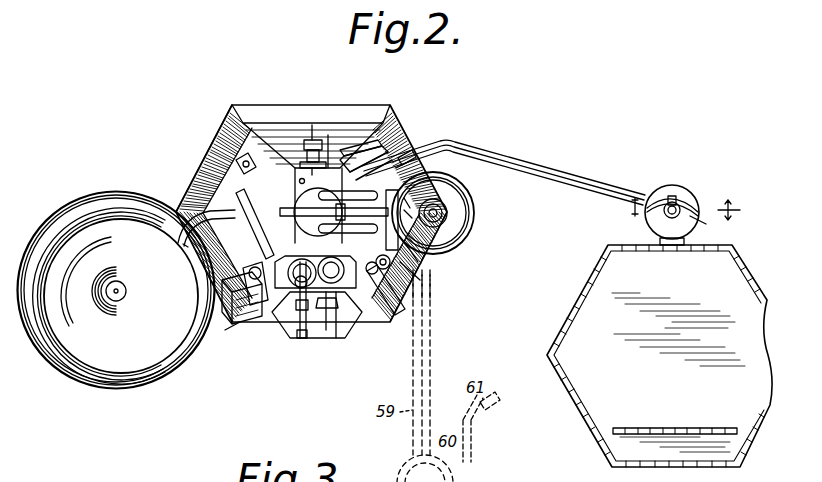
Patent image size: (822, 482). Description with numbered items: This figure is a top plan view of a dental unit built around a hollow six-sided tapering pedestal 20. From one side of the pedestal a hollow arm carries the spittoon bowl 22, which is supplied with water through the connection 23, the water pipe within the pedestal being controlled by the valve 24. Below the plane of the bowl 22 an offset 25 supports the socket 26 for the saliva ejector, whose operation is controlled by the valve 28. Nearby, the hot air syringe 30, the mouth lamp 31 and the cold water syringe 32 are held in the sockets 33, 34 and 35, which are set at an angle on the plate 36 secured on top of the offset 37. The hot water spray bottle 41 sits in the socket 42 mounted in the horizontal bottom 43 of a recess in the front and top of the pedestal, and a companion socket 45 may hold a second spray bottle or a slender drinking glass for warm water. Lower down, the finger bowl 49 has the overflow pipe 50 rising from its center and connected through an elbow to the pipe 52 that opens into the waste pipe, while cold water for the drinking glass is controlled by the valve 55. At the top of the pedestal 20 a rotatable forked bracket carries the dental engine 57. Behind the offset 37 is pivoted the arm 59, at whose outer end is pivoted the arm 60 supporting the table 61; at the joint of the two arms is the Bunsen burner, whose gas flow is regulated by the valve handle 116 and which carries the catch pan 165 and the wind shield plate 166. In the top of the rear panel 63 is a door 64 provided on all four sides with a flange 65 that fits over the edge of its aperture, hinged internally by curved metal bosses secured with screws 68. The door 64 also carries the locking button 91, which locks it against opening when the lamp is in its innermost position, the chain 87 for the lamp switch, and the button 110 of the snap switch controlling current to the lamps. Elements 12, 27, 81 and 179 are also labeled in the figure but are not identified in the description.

The pivot axis 12 is at (684, 212).
The pedestal 20 is at (236, 188).
The spittoon bowl 22 is at (128, 388).
The connection 23 is at (187, 215).
The valve 24 is at (240, 162).
The offset 25 is at (240, 330).
The socket 26 is at (234, 318).
The link 27 is at (257, 302).
The valve 28 is at (206, 228).
The hot air syringe 30 is at (437, 311).
The mouth lamp 31 is at (439, 302).
The cold water syringe 32 is at (430, 282).
The socket 33 is at (378, 312).
The socket 34 is at (434, 293).
The socket 35 is at (427, 255).
The plate 36 is at (382, 322).
The offset 37 is at (450, 242).
The hot water spray bottle 41 is at (304, 300).
The socket 42 is at (297, 300).
The horizontal bottom 43 is at (336, 305).
The companion socket 45 is at (326, 292).
The finger bowl 49 is at (342, 330).
The overflow pipe 50 is at (315, 259).
The pipe 52 is at (334, 205).
The valve 55 is at (316, 328).
The dental engine 57 is at (475, 213).
The arm 59 is at (522, 162).
The arm 60 is at (670, 242).
The table 61 is at (598, 296).
The rear panel 63 is at (392, 132).
The door 64 is at (360, 160).
The flange 65 is at (345, 150).
The screws 68 is at (678, 200).
The rod 81 is at (328, 150).
The chain 87 is at (306, 144).
The locking button 91 is at (300, 164).
The button 110 is at (311, 148).
The valve handle 116 is at (408, 163).
The catch pan 165 is at (712, 228).
The wind shield plate 166 is at (663, 195).
The block 179 is at (410, 150).